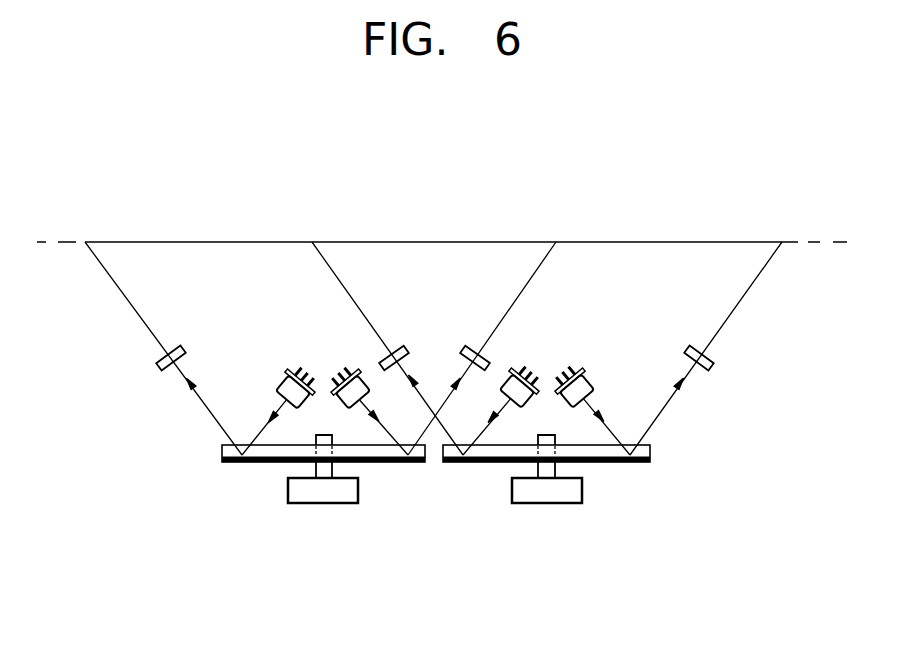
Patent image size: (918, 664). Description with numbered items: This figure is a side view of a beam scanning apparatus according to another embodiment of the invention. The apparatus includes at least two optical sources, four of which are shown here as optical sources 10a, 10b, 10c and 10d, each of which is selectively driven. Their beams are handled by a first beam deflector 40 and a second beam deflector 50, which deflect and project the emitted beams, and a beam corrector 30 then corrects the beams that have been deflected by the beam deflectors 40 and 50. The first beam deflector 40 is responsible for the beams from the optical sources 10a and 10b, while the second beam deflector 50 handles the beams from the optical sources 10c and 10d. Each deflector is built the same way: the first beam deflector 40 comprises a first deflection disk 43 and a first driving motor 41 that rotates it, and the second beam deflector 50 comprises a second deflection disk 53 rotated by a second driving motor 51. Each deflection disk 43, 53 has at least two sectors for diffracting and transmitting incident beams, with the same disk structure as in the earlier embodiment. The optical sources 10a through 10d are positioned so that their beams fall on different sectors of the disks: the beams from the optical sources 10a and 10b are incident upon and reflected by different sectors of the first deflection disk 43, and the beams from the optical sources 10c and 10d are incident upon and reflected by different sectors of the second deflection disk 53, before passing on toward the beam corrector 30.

The beam corrector 30 is at (158, 360).
The optical source 10a is at (297, 367).
The optical source 10b is at (342, 373).
The optical source 10c is at (540, 378).
The optical source 10d is at (593, 370).
The first beam deflector 40 is at (323, 515).
The first driving motor 41 is at (349, 519).
The first deflection disk 43 is at (257, 465).
The second beam deflector 50 is at (546, 515).
The second driving motor 51 is at (547, 505).
The second deflection disk 53 is at (612, 465).